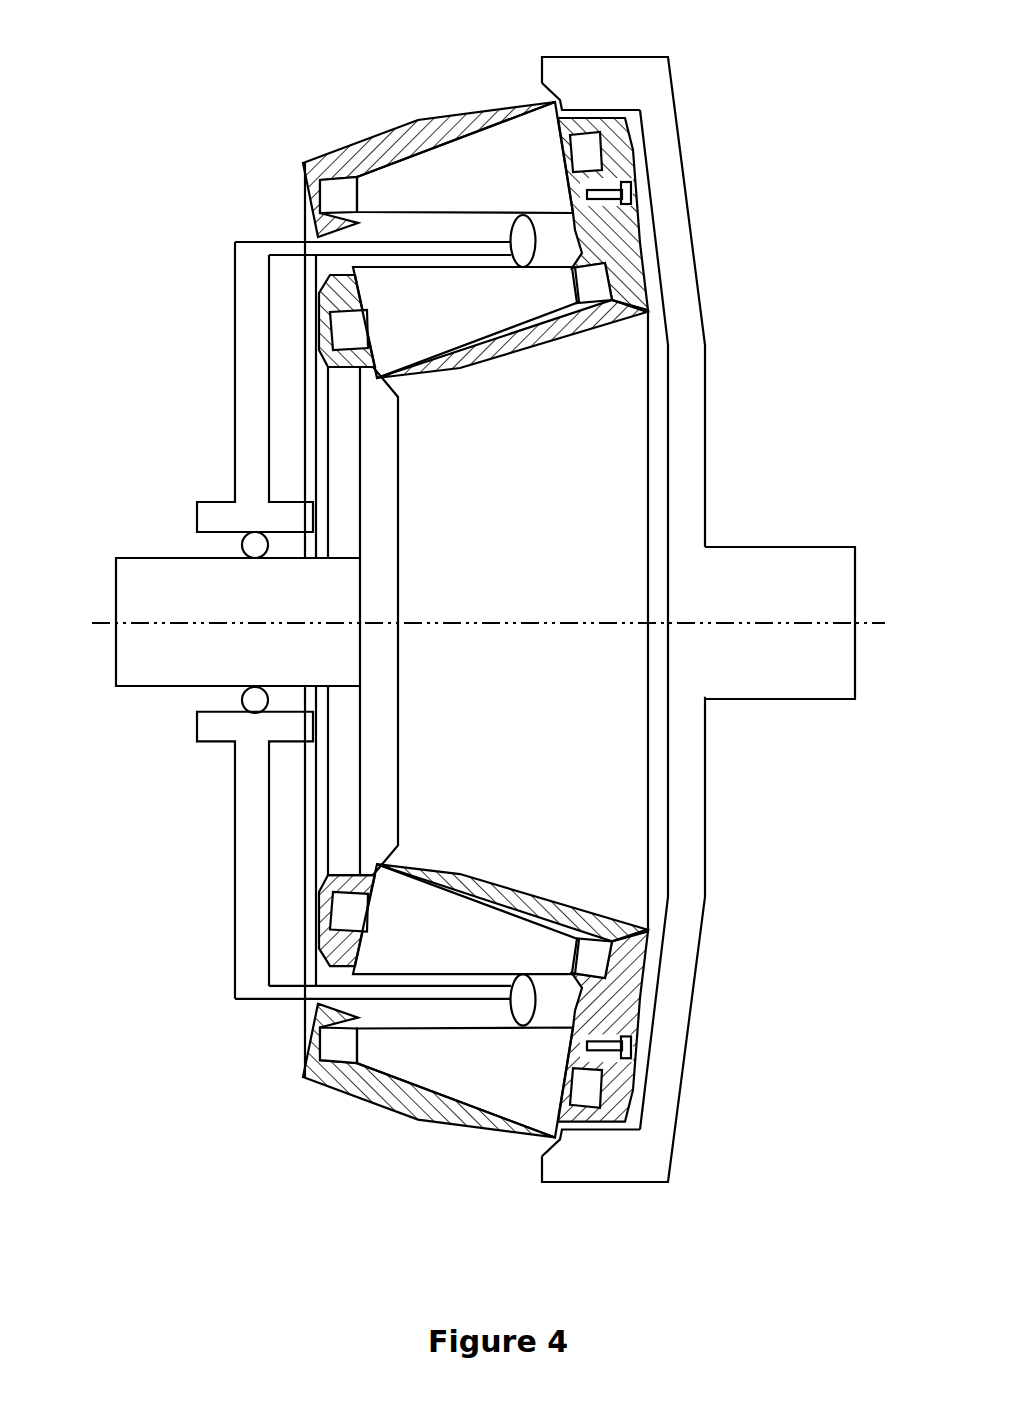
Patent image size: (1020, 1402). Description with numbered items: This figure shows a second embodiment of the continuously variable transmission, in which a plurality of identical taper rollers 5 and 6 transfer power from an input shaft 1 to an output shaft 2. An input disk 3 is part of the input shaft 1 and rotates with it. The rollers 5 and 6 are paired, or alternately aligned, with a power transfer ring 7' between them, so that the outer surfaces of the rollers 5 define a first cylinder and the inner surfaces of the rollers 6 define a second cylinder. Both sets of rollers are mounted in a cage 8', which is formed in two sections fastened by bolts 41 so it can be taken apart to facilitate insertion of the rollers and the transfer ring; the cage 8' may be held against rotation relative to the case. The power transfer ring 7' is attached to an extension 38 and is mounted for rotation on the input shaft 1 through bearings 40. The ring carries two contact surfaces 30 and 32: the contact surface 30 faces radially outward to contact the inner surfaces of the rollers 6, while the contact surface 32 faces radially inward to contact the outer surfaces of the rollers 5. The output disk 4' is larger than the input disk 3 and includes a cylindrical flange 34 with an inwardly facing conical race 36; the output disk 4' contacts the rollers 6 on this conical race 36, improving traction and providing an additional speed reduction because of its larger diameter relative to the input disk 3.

The input shaft 1 is at (140, 587).
The output shaft 2 is at (798, 578).
The input disk 3 is at (383, 455).
The output disk 4' is at (657, 646).
The taper rollers 5 is at (428, 318).
The taper rollers 6 is at (432, 168).
The power transfer ring 7' is at (501, 612).
The cage 8' is at (411, 584).
The contact surface 30 is at (524, 216).
The contact surface 32 is at (523, 268).
The cylindrical flange 34 is at (598, 73).
The conical race 36 is at (543, 97).
The extension 38 is at (283, 246).
The bearings 40 is at (255, 700).
The bolts 41 is at (630, 192).